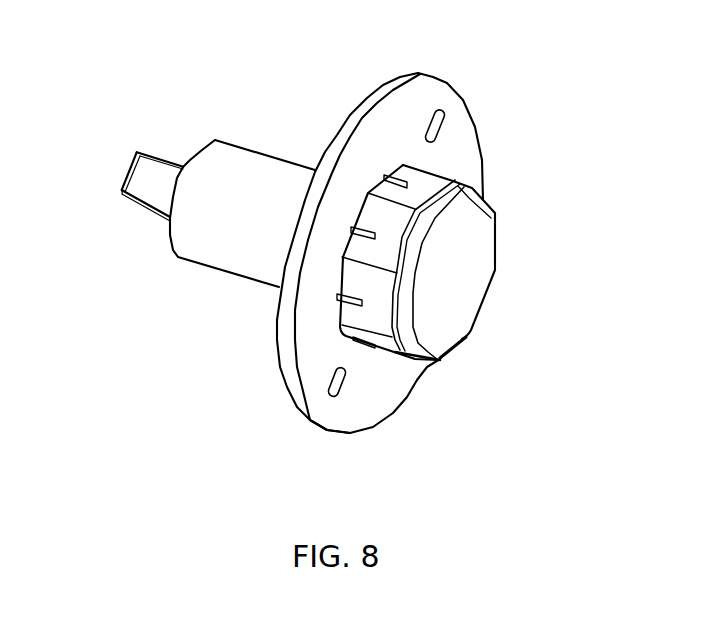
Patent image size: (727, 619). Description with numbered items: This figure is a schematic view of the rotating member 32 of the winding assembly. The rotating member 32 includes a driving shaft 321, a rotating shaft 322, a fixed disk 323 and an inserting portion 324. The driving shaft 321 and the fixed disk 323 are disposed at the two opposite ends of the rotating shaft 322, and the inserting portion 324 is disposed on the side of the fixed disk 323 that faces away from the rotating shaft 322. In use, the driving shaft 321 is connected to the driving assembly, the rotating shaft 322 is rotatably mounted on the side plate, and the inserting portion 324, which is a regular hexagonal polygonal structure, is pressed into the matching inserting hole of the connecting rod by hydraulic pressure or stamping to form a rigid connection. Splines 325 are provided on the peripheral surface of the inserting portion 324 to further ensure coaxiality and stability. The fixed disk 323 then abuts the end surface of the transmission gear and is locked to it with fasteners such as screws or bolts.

The rotating member 32 is at (221, 56).
The driving shaft 321 is at (143, 174).
The rotating shaft 322 is at (233, 227).
The fixed disk 323 is at (368, 405).
The inserting portion 324 is at (457, 287).
The splines 325 is at (337, 300).